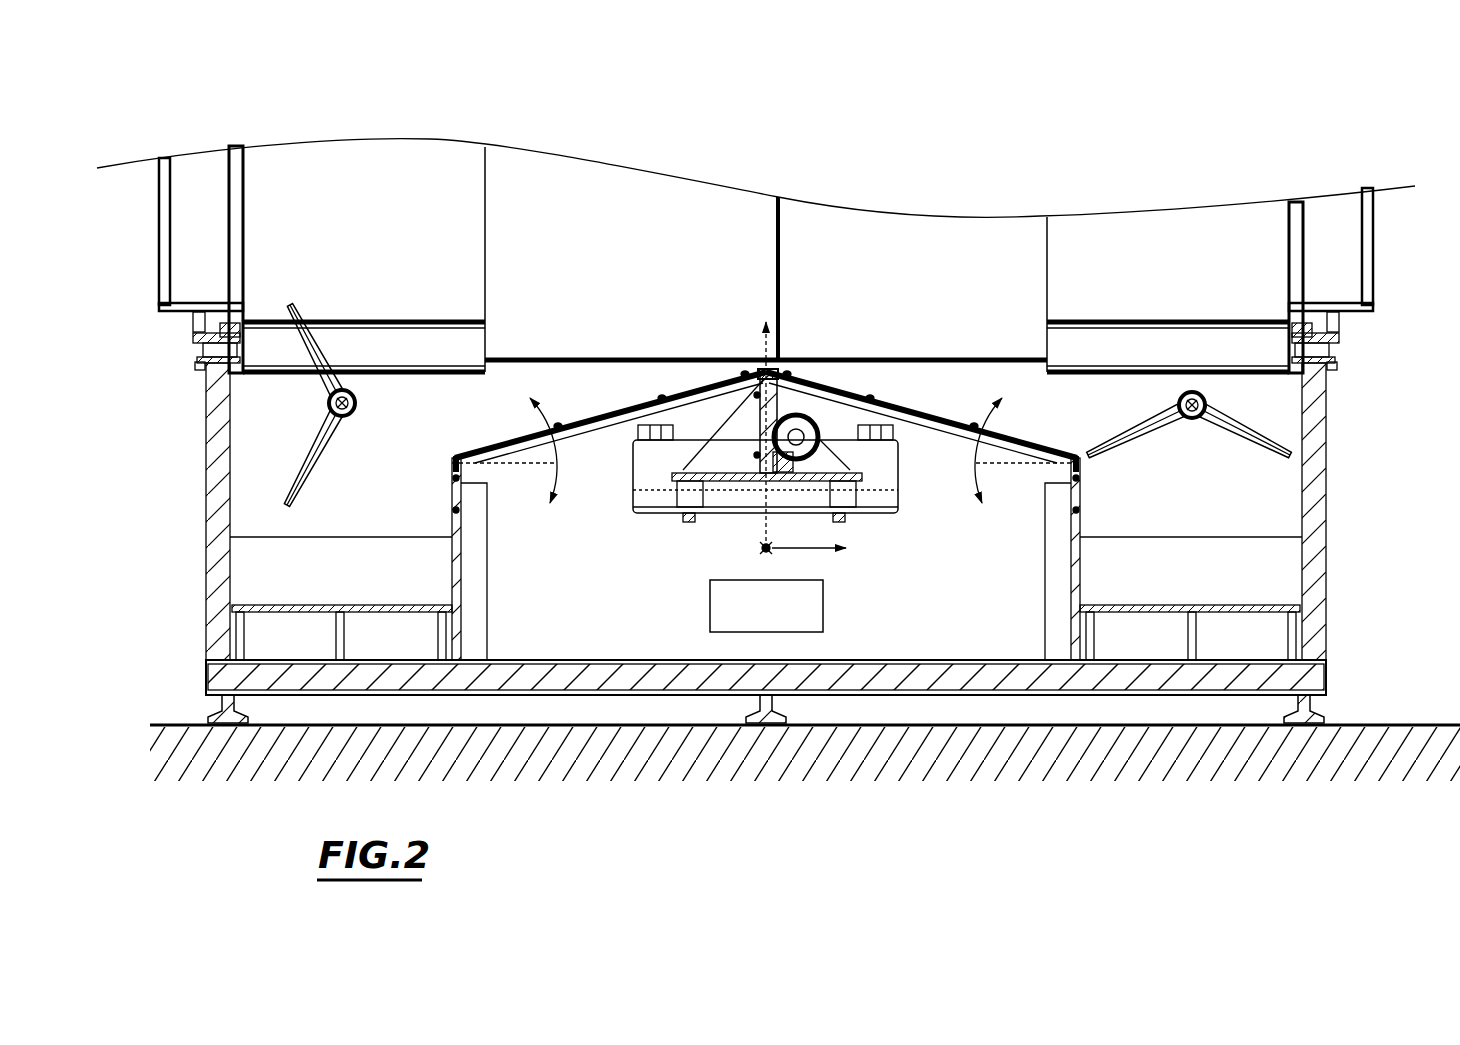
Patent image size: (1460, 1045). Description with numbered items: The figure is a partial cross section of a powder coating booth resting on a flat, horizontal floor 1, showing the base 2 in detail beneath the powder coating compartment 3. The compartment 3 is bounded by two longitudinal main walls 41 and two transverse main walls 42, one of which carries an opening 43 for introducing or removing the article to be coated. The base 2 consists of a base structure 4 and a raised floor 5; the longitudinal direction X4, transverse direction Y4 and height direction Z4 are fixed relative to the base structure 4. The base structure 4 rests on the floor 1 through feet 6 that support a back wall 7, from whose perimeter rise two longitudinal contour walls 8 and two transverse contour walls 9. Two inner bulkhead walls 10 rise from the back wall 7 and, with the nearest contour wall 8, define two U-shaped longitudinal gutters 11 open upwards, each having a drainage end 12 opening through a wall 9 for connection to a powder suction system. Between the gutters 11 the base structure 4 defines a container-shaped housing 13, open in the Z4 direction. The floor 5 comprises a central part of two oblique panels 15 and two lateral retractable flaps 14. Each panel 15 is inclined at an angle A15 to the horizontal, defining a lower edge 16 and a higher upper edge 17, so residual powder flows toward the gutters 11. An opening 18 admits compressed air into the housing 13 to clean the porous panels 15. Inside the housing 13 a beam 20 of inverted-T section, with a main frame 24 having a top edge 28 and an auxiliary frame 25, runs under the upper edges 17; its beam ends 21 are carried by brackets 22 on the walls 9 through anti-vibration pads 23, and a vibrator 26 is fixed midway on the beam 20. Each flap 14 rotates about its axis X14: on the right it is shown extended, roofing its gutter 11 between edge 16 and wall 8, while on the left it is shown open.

The floor 1 is at (1373, 716).
The base 2 is at (178, 473).
The powder coating compartment 3 is at (616, 214).
The base structure 4 is at (1307, 682).
The floor 5 is at (780, 436).
The feet 6 is at (229, 724).
The back wall 7 is at (993, 672).
The longitudinal contour walls 8 is at (218, 546).
The transverse contour walls 9 is at (1268, 492).
The longitudinal inner walls 10 is at (462, 594).
The longitudinal gutters 11 is at (413, 456).
The drainage end 12 is at (277, 582).
The housing 13 is at (578, 618).
The retractable flaps 14 is at (767, 405).
The oblique panels 15 is at (761, 394).
The lower edge 16 is at (452, 458).
The upper edge 17 is at (777, 385).
The opening 18 is at (766, 606).
The beam 20 is at (822, 418).
The beam ends 21 is at (673, 471).
The bracket 22 is at (657, 497).
The anti-vibration pads 23 is at (872, 497).
The main frame 24 is at (728, 373).
The auxiliary frame 25 is at (740, 484).
The vibrator 26 is at (885, 410).
The top edge 28 is at (813, 382).
The longitudinal main walls 41 is at (185, 223).
The transverse main walls 42 is at (1128, 248).
The opening 43 is at (990, 255).
The axis of rotation X14 is at (357, 406).
The longitudinal direction X4 is at (782, 537).
The transverse direction Y4 is at (827, 550).
The height direction Z4 is at (749, 417).
The angle A15 is at (766, 450).